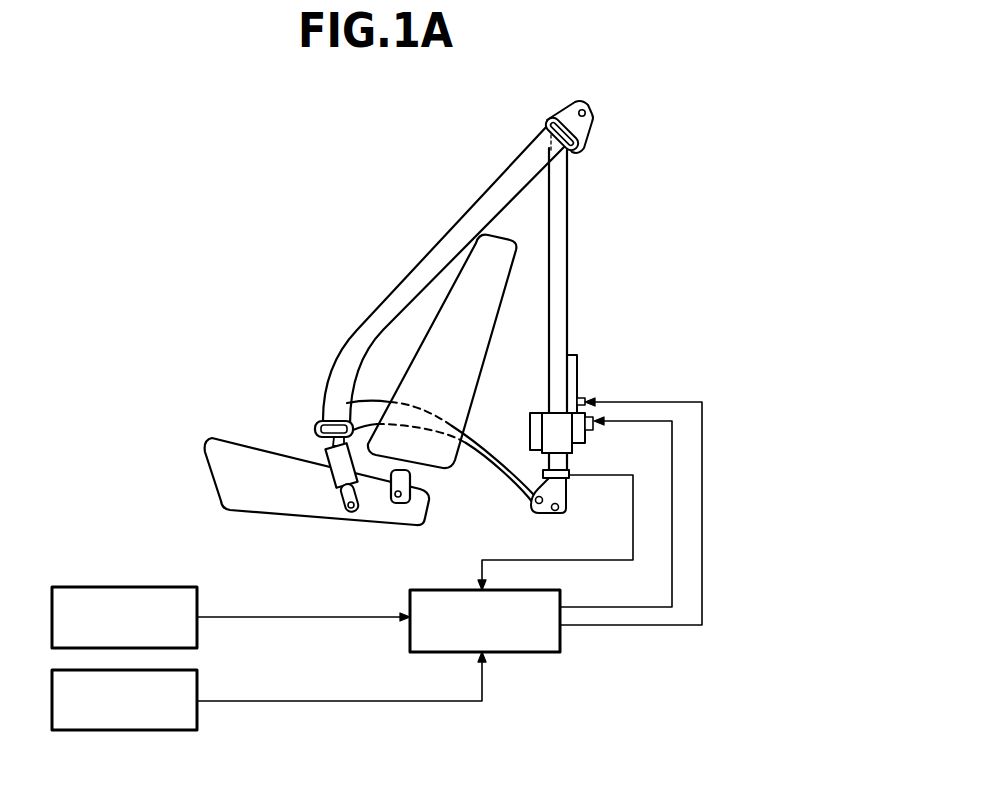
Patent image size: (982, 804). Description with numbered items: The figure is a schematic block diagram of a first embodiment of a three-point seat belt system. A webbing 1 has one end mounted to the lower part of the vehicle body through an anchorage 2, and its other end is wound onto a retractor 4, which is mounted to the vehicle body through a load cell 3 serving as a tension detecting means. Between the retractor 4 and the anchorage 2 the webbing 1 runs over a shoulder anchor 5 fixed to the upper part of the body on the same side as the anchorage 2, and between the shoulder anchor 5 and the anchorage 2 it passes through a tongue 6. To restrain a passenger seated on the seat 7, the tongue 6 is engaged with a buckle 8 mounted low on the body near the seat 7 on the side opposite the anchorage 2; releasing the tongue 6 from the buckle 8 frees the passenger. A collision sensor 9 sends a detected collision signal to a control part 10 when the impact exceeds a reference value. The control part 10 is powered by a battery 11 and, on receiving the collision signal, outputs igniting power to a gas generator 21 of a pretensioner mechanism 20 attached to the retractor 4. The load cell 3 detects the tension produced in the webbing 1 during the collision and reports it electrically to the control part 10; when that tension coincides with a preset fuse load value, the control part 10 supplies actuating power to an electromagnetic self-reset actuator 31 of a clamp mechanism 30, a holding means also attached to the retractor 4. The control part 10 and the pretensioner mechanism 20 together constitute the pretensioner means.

The webbing 1 is at (413, 262).
The anchorage 2 is at (532, 510).
The load cell 3 is at (567, 481).
The retractor 4 is at (530, 430).
The shoulder anchor 5 is at (582, 150).
The tongue 6 is at (320, 426).
The seat 7 is at (230, 450).
The buckle 8 is at (342, 468).
The collision sensor 9 is at (140, 587).
The control part 10 is at (525, 653).
The battery 11 is at (198, 685).
The pretensioner mechanism 20 is at (585, 368).
The gas generator 21 is at (583, 397).
The clamp mechanism 30 is at (580, 448).
The actuator 31 is at (595, 428).